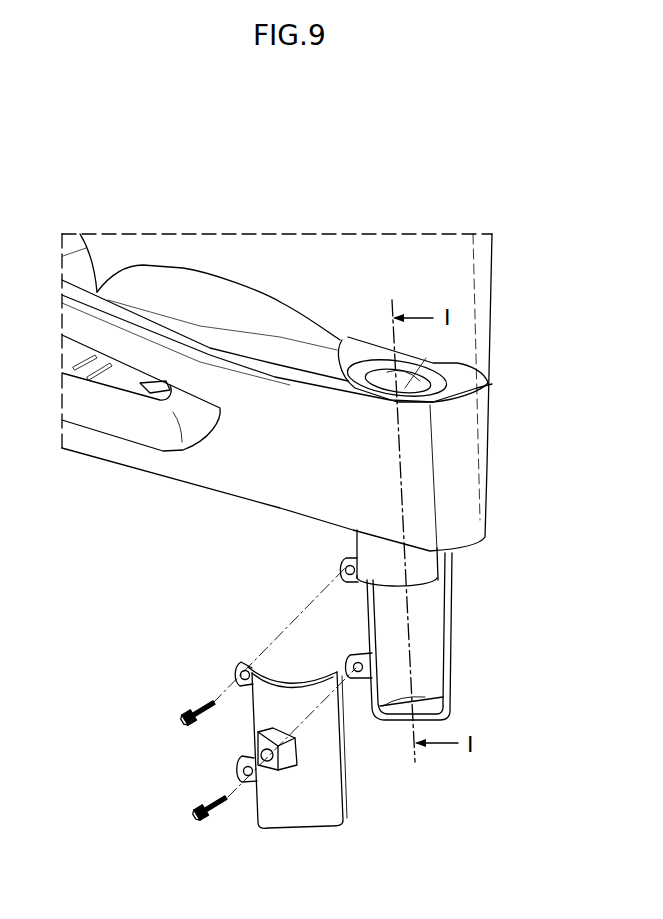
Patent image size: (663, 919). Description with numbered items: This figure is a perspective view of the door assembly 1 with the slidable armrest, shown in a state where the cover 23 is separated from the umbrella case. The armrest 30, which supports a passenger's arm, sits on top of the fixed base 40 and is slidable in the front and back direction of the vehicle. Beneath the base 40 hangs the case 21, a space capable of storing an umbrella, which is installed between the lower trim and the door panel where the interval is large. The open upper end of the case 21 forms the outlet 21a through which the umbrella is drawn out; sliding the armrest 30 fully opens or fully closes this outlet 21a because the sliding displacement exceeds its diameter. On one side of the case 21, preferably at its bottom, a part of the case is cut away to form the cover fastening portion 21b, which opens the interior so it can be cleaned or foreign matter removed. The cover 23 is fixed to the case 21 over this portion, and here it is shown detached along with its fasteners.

The door assembly 1 is at (470, 209).
The armrest 30 is at (262, 298).
The base 40 is at (368, 348).
The case 21 is at (453, 622).
The outlet 21a is at (474, 366).
The cover fastening portion 21b is at (425, 673).
The cover 23 is at (317, 803).